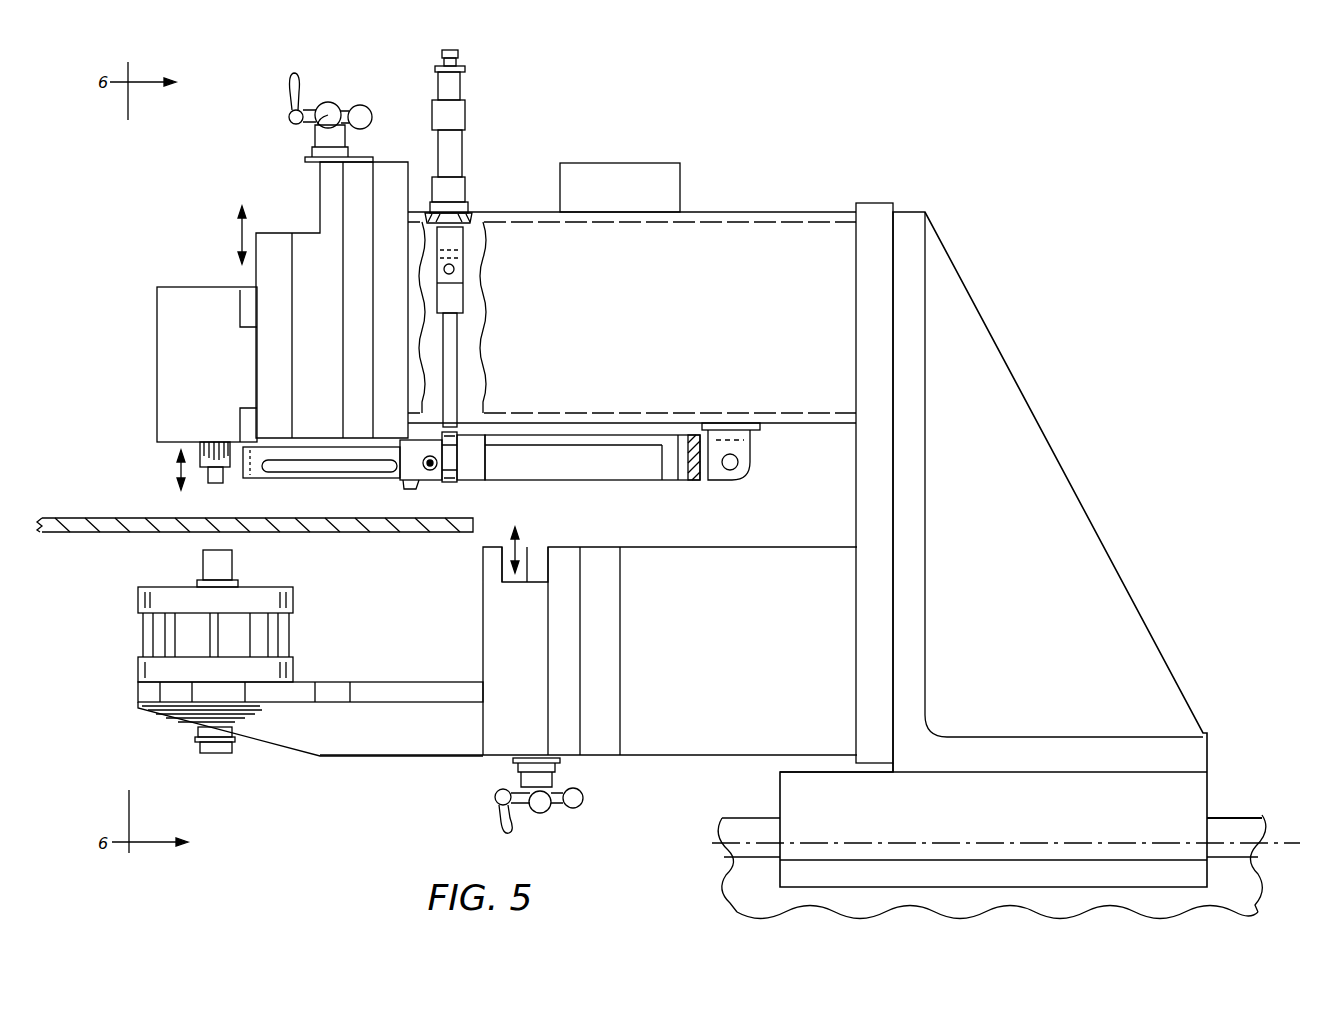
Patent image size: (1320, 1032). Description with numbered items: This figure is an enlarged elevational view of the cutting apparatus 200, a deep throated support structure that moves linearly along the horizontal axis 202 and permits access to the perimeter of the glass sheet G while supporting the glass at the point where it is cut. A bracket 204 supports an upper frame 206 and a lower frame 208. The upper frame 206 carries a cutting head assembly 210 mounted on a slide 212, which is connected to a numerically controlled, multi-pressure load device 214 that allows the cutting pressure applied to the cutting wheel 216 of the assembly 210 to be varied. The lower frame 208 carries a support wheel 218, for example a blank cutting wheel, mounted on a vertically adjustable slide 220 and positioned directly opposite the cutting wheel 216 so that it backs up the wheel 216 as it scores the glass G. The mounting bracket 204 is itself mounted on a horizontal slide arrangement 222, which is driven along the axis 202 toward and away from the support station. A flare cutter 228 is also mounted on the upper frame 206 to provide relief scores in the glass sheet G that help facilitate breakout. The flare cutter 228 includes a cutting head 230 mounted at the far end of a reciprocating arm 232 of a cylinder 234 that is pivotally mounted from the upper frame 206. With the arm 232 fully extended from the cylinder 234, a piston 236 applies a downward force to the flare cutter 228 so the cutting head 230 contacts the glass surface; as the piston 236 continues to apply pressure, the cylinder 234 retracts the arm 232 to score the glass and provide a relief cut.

The cutting apparatus 200 is at (720, 94).
The horizontal axis 202 is at (1275, 840).
The bracket 204 is at (1005, 353).
The upper frame 206 is at (760, 212).
The lower frame 208 is at (785, 548).
The cutting head assembly 210 is at (157, 350).
The slide 212 is at (318, 186).
The multi-pressure load device 214 is at (622, 163).
The cutting wheel 216 is at (222, 483).
The support wheel 218 is at (219, 552).
The vertically adjustable slide 220 is at (525, 550).
The horizontal slide arrangement 222 is at (1220, 815).
The flare cutter 228 is at (605, 480).
The cutting head 230 is at (408, 478).
The reciprocating arm 232 is at (447, 480).
The cylinder 234 is at (520, 480).
The piston 236 is at (465, 240).
The glass sheet G is at (73, 518).